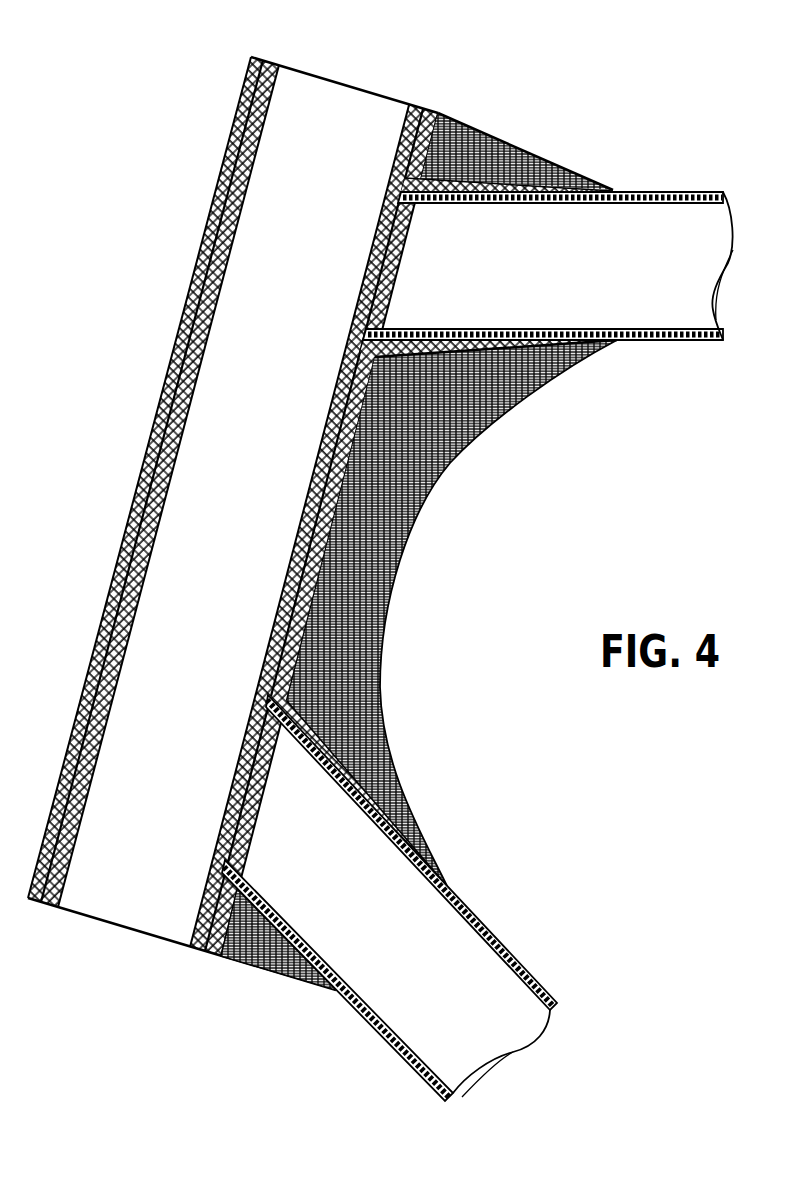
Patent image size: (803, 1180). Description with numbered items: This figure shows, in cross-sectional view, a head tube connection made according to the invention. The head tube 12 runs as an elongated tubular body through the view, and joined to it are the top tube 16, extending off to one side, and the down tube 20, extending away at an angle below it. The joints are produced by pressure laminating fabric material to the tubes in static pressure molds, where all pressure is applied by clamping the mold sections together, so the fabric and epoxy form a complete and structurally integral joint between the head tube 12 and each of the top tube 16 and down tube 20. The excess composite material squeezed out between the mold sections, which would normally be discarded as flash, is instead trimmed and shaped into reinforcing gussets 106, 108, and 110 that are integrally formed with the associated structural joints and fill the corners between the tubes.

The head tube 12 is at (263, 103).
The top tube 16 is at (650, 340).
The down tube 20 is at (483, 928).
The gusset 106 is at (523, 162).
The gusset 108 is at (417, 455).
The gusset 110 is at (248, 942).